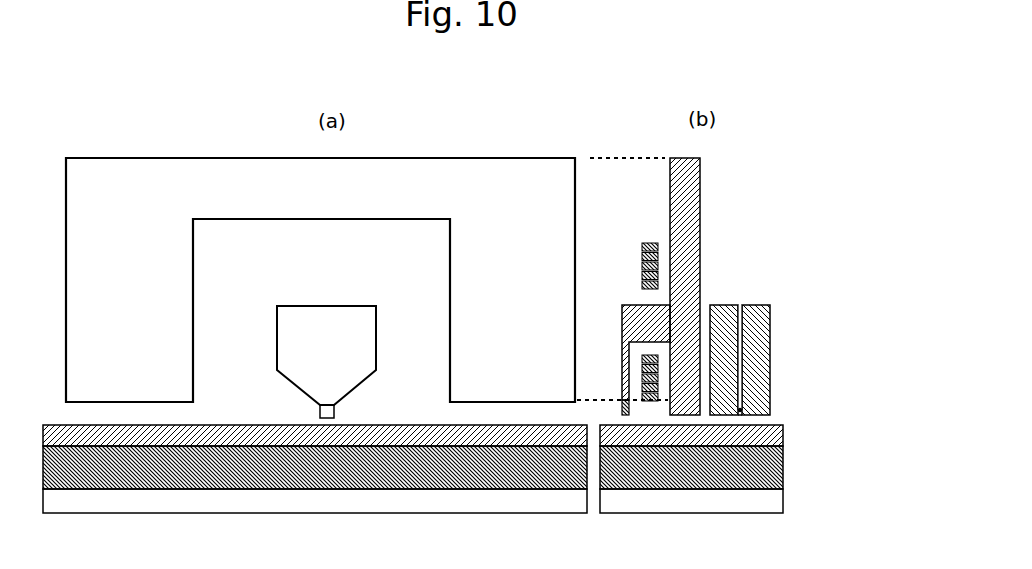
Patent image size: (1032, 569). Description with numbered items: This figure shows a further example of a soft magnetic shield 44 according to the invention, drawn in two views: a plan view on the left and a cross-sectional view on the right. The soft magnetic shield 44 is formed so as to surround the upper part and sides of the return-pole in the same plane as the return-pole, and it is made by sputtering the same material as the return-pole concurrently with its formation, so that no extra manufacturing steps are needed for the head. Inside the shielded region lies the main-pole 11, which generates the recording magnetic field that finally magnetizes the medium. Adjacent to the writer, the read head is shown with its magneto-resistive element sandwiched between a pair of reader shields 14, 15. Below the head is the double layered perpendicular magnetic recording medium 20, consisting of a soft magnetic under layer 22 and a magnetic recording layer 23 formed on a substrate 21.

The soft magnetic shield 44 is at (441, 166).
The main-pole 11 is at (350, 388).
The reader shield 14 is at (766, 330).
The reader shield 15 is at (723, 311).
The double layered perpendicular magnetic recording medium 20 is at (460, 469).
The substrate 21 is at (435, 501).
The soft magnetic under layer 22 is at (762, 462).
The magnetic recording layer 23 is at (760, 433).